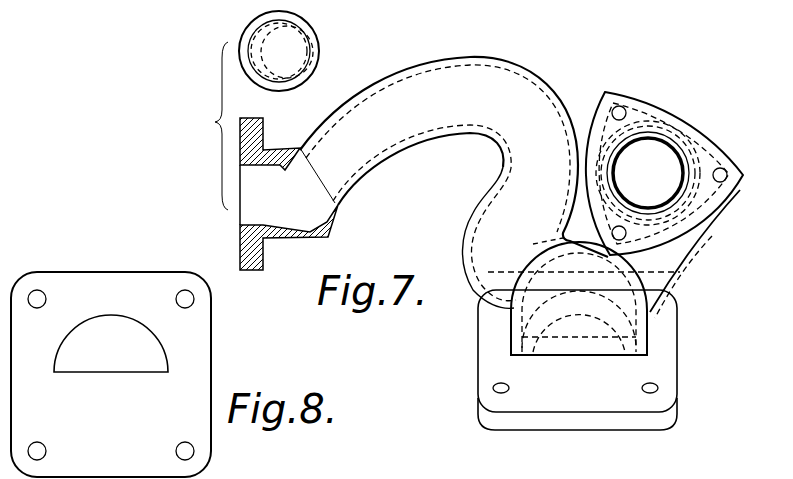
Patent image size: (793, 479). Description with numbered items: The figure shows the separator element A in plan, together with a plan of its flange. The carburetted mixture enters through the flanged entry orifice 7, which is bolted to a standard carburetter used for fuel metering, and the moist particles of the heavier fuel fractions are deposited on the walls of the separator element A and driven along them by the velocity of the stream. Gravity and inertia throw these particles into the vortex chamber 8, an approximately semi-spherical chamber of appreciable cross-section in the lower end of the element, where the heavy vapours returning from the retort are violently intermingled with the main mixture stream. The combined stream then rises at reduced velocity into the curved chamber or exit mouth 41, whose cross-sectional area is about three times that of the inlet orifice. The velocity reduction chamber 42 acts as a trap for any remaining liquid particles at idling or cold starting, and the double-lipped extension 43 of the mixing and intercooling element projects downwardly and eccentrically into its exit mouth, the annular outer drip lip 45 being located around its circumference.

The flanged entry orifice 7 is at (319, 43).
The separator element A is at (520, 157).
The curved chamber or exit mouth 41 is at (681, 148).
The double-lipped extension 43 is at (680, 160).
The annular outer drip lip 45 is at (690, 168).
The velocity reduction chamber 42 is at (690, 249).
The vortex chamber 8 is at (583, 308).